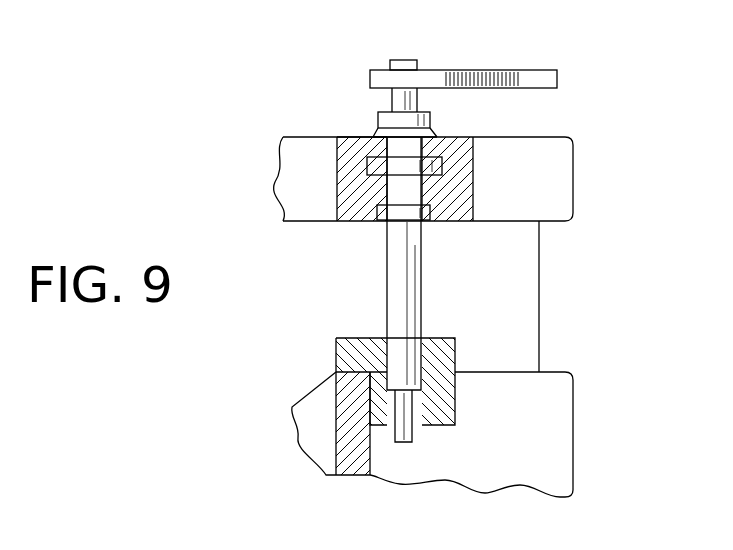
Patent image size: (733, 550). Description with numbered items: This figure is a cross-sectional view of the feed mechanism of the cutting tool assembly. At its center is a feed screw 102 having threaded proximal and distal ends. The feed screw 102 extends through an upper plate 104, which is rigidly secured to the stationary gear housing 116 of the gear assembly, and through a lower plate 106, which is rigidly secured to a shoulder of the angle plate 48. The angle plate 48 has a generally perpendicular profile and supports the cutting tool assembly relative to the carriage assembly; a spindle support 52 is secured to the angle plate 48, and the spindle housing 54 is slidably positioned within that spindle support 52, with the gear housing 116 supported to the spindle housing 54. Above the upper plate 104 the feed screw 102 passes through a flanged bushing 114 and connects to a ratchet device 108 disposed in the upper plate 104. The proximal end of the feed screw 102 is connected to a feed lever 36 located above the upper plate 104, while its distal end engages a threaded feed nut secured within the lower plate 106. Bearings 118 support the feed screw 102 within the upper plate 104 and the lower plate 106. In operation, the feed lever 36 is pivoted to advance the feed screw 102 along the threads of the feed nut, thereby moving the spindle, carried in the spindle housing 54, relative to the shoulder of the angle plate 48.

The feed lever 36 is at (537, 80).
The feed screw 102 is at (395, 100).
The upper plate 104 is at (337, 137).
The flanged bushing 114 is at (437, 128).
The gear housing 116 is at (552, 177).
The ratchet device 108 is at (370, 174).
The bearings 118 is at (393, 152).
The spindle housing 54 is at (515, 292).
The lower plate 106 is at (348, 356).
The angle plate 48 is at (337, 410).
The spindle support 52 is at (547, 418).